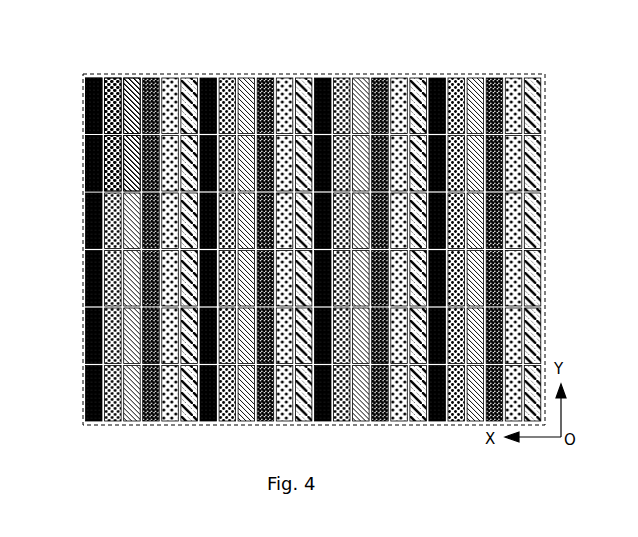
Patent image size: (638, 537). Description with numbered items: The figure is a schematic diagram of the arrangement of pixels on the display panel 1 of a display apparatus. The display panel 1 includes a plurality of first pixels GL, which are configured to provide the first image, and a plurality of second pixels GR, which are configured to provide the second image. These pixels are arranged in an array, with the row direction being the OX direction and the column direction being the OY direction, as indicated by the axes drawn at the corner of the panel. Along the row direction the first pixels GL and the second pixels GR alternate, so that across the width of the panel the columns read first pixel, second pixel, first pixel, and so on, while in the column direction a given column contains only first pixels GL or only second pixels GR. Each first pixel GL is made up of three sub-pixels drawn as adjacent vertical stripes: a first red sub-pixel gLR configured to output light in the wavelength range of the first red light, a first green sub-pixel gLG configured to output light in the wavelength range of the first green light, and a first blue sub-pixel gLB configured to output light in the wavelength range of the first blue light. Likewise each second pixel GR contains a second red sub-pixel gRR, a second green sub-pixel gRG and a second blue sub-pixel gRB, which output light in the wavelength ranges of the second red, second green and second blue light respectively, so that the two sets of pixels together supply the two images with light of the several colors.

The display panel 1 is at (334, 233).
The first pixel GL is at (98, 66).
The second pixel GR is at (156, 66).
The first red sub-pixel gLR is at (103, 78).
The first green sub-pixel gLG is at (118, 90).
The first blue sub-pixel gLB is at (134, 104).
The second red sub-pixel gRR is at (108, 120).
The second green sub-pixel gRG is at (121, 131).
The second blue sub-pixel gRB is at (131, 138).